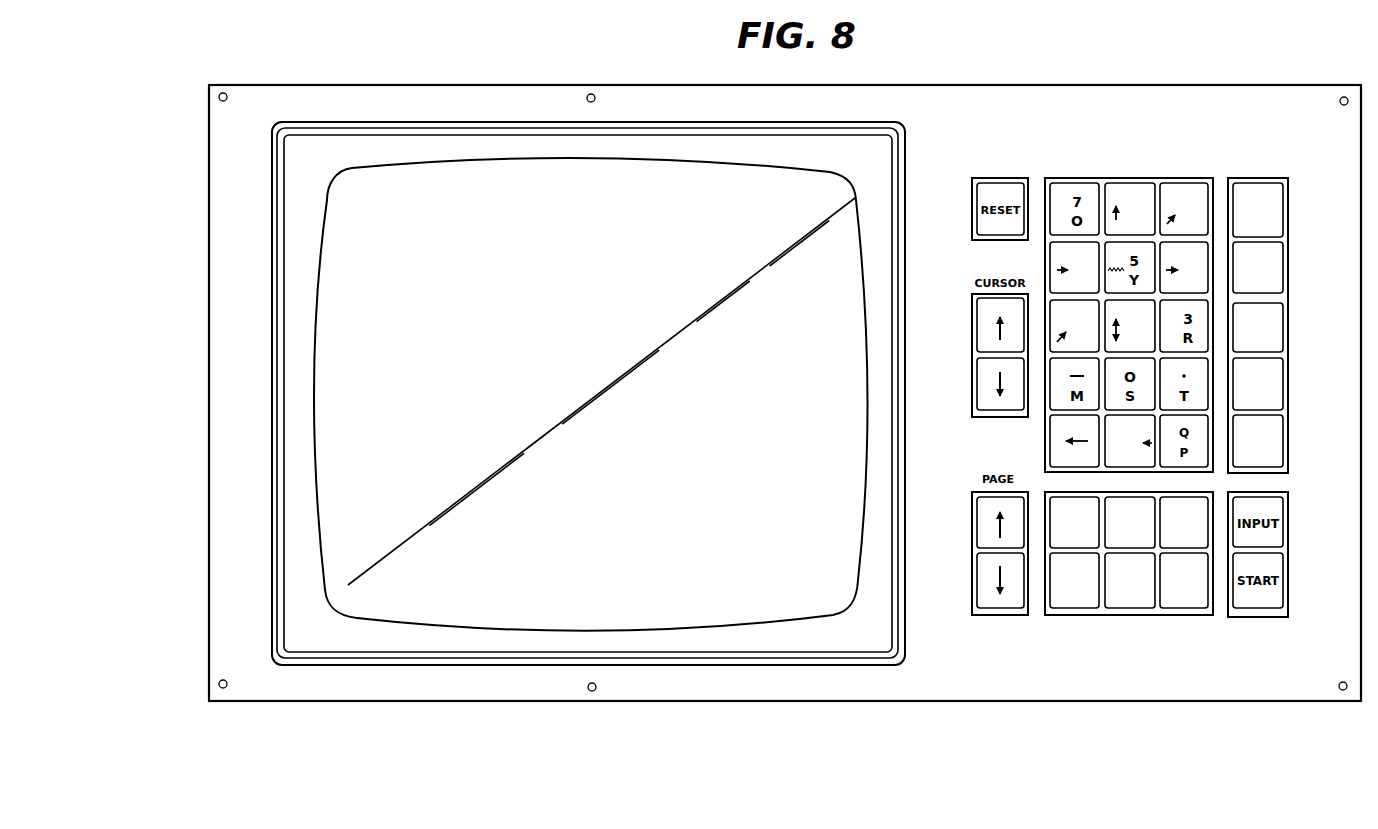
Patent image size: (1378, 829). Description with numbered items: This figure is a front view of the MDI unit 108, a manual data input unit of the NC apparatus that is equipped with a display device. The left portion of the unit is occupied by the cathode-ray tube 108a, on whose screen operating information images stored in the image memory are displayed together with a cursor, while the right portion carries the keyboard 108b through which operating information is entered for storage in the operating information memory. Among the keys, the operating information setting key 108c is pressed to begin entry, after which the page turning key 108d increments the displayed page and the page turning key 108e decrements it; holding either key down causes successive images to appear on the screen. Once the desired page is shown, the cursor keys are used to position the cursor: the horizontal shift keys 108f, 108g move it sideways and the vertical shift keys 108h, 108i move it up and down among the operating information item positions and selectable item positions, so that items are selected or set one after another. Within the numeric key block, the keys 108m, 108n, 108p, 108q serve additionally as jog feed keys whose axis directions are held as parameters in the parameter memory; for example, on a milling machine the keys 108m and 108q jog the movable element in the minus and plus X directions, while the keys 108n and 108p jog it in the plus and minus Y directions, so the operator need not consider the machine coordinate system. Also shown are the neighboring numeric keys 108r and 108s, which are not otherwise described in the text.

The MDI unit 108 is at (1099, 85).
The cathode-ray tube 108a is at (481, 600).
The keyboard 108b is at (1301, 404).
The operating information setting key 108c is at (1143, 600).
The page turning key 108d is at (980, 520).
The page turning key 108e is at (1002, 603).
The horizontal shift key 108f is at (1057, 450).
The horizontal shift key 108g is at (1136, 458).
The vertical shift key 108h is at (978, 388).
The vertical shift key 108i is at (978, 322).
The numeric key serving as jog feed key 108m is at (1050, 247).
The numeric key serving as jog feed key 108n is at (1198, 247).
The numeric key serving as jog feed key 108p is at (1192, 182).
The numeric key serving as jog feed key 108q is at (1098, 308).
The 8/N key 108r is at (1135, 188).
The 2/F key 108s is at (1145, 310).